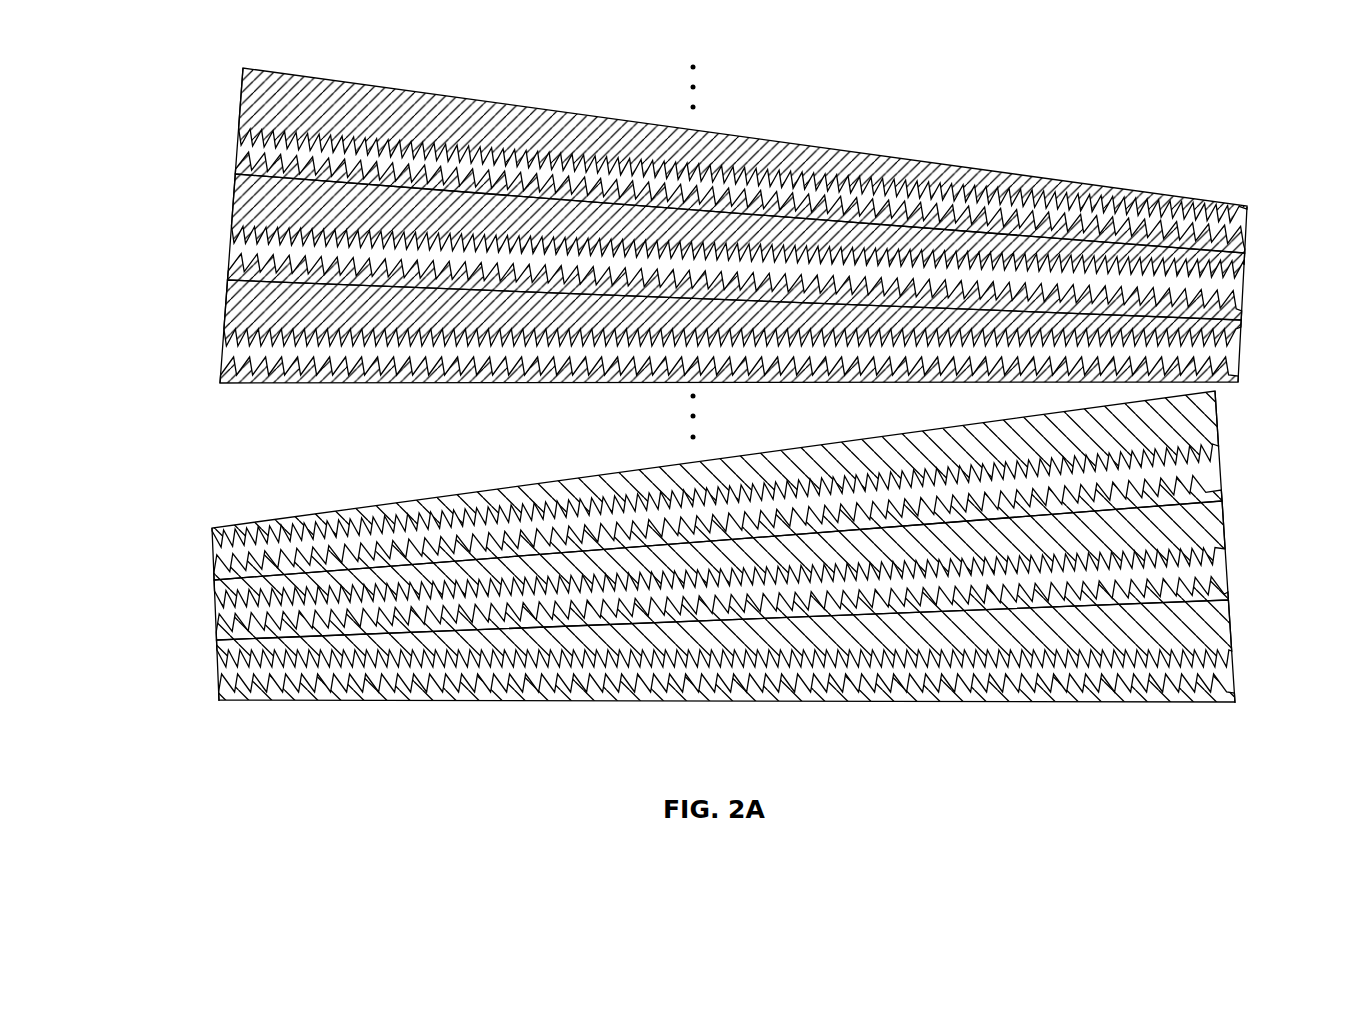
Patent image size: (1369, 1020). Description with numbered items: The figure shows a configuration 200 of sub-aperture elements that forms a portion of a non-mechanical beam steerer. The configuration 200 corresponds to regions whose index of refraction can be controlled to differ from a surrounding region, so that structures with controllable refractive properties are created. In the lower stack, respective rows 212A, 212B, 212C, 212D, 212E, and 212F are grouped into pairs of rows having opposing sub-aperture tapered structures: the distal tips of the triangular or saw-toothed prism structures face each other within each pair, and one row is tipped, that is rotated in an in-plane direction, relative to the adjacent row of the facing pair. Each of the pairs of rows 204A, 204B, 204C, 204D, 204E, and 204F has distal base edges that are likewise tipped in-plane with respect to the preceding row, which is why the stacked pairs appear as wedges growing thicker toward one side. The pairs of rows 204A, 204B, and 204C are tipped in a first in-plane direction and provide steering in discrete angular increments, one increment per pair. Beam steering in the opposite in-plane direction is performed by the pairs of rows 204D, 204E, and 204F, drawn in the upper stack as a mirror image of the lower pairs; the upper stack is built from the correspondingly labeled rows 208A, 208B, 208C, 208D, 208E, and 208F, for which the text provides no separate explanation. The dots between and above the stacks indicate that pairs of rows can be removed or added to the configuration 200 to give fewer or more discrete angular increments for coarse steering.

The configuration of sub-aperture elements 200 is at (1175, 86).
The pair of rows 204A is at (1234, 600).
The pair of rows 204B is at (1234, 493).
The pair of rows 204C is at (1234, 391).
The pair of rows 204D is at (1250, 323).
The pair of rows 204E is at (1250, 268).
The pair of rows 204F is at (1250, 207).
The layer 208A is at (222, 371).
The layer 208B is at (226, 333).
The layer 208C is at (229, 261).
The layer 208D is at (231, 230).
The layer 208E is at (236, 160).
The layer 208F is at (240, 103).
The row 212A is at (220, 686).
The row 212B is at (220, 658).
The row 212C is at (218, 628).
The row 212D is at (215, 597).
The row 212E is at (214, 568).
The row 212F is at (212, 540).